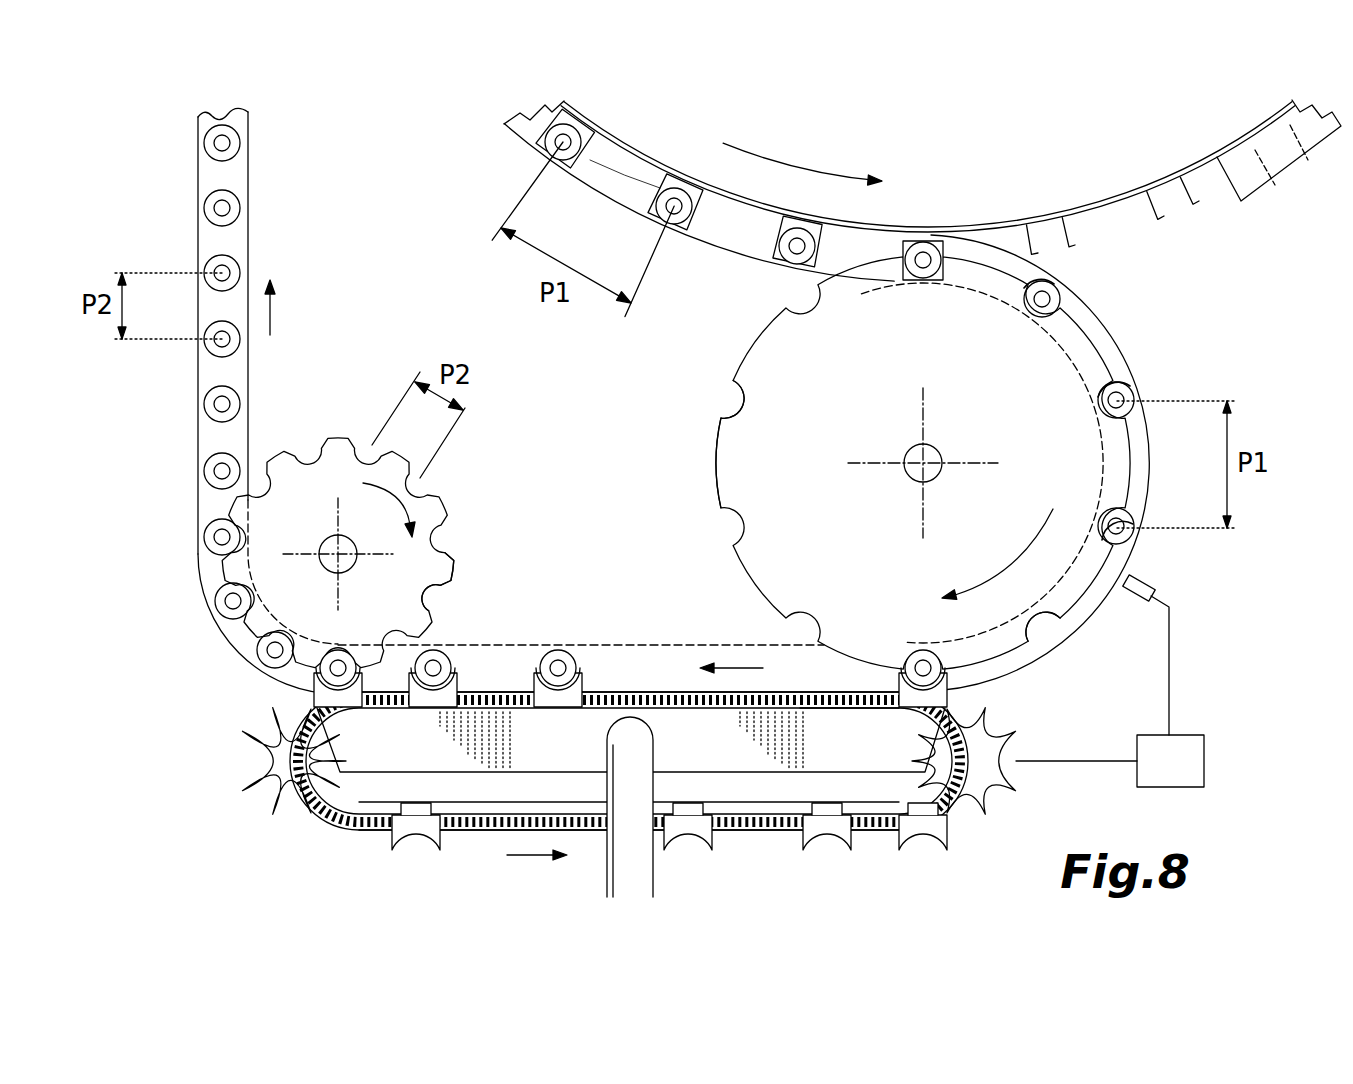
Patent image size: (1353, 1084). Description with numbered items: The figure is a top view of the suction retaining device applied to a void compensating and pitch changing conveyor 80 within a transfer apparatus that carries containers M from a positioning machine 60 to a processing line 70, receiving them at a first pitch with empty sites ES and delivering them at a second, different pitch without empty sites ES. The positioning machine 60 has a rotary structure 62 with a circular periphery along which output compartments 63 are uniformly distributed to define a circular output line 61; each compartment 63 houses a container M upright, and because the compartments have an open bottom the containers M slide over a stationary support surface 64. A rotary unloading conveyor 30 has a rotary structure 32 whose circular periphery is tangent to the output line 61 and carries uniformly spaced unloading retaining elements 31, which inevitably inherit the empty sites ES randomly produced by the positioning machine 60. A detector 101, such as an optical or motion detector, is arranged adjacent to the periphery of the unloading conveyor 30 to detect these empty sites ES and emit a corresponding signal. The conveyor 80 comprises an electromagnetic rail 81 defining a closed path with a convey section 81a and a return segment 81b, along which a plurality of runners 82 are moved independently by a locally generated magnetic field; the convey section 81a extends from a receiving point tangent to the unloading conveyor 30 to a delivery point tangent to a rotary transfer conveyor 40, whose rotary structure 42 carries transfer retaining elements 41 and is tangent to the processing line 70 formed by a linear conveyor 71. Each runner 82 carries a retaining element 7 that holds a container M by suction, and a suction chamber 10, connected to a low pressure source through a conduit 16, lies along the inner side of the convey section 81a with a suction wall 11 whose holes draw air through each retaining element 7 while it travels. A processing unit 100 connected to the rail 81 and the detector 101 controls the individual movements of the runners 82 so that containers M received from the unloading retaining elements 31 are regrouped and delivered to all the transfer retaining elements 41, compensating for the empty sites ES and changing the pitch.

The retaining element 7 is at (418, 835).
The suction chamber 10 is at (840, 712).
The suction wall 11 is at (846, 713).
The conduit 16 is at (608, 875).
The rotary unloading conveyor 30 is at (700, 446).
The unloading retaining element 31 is at (733, 393).
The rotary structure 32 is at (735, 479).
The rotary transfer conveyor 40 is at (452, 507).
The transfer retaining element 41 is at (435, 600).
The rotary structure 42 is at (453, 566).
The positioning machine 60 is at (1226, 232).
The circular output line 61 is at (728, 228).
The rotary structure 62 is at (1097, 200).
The output compartment 63 is at (937, 235).
The stationary support surface 64 is at (608, 187).
The processing line 70 is at (170, 227).
The linear conveyor 71 is at (236, 172).
The void compensating and pitch changing conveyor 80 is at (619, 642).
The electromagnetic rail 81 is at (737, 757).
The convey section 81a is at (661, 688).
The return segment 81b is at (480, 835).
The runner 82 is at (398, 812).
The processing unit 100 is at (1110, 761).
The detector 101 is at (1152, 585).
The container M is at (255, 398).
The empty site ES is at (1050, 632).